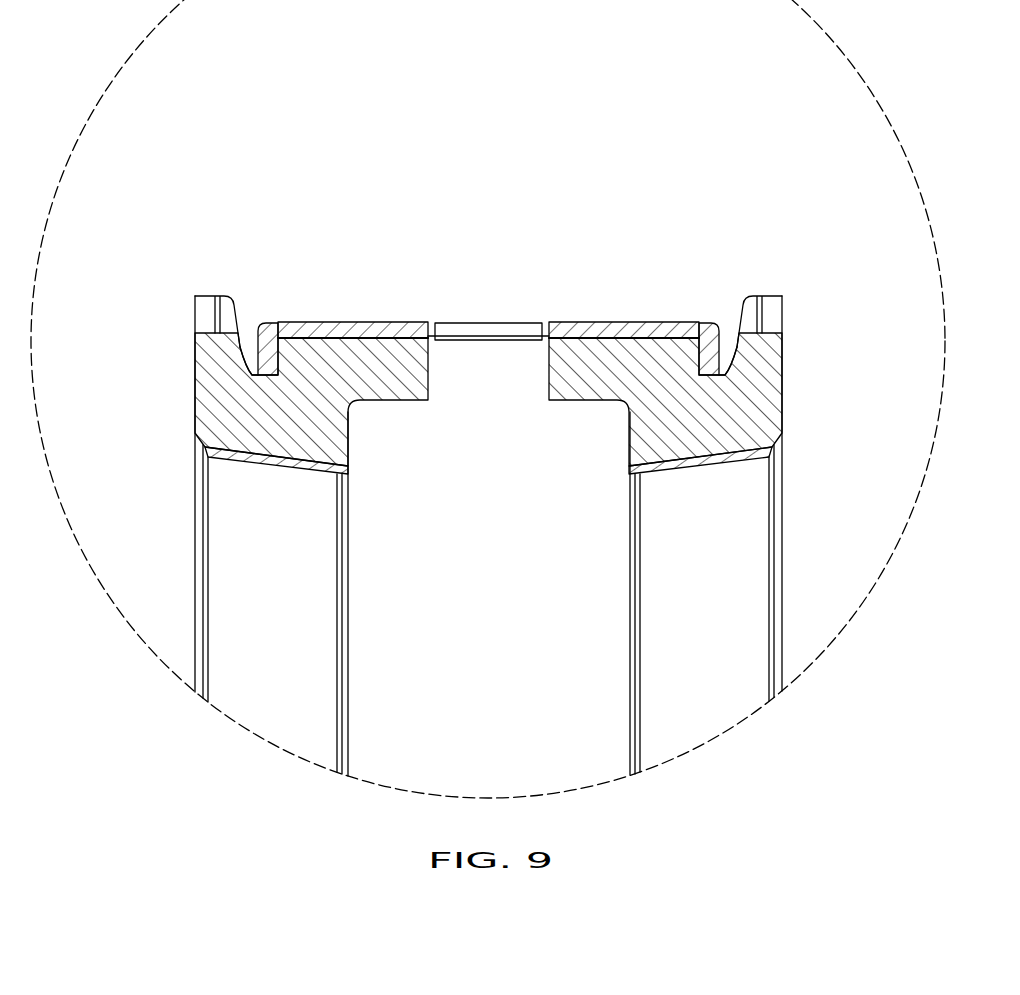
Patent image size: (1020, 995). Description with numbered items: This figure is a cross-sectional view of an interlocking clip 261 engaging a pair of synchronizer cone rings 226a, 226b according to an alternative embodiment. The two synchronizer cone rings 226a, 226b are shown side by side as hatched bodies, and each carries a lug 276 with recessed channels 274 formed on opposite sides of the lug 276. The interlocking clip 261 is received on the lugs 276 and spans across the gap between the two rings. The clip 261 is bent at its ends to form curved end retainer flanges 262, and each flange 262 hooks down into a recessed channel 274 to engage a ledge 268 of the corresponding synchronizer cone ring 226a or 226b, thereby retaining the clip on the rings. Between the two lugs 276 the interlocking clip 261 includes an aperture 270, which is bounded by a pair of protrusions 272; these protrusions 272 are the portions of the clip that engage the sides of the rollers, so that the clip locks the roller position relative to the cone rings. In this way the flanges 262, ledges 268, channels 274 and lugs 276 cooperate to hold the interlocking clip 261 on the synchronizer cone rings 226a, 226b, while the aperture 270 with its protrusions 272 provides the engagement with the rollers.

The synchronizer cone ring 226a is at (245, 403).
The synchronizer cone ring 226b is at (747, 397).
The interlocking clip 261 is at (497, 299).
The curved end retainer flange 262 is at (256, 334).
The ledge 268 is at (278, 323).
The aperture 270 is at (543, 336).
The protrusion 272 is at (428, 338).
The recessed channel 274 is at (250, 374).
The lug 276 is at (323, 338).